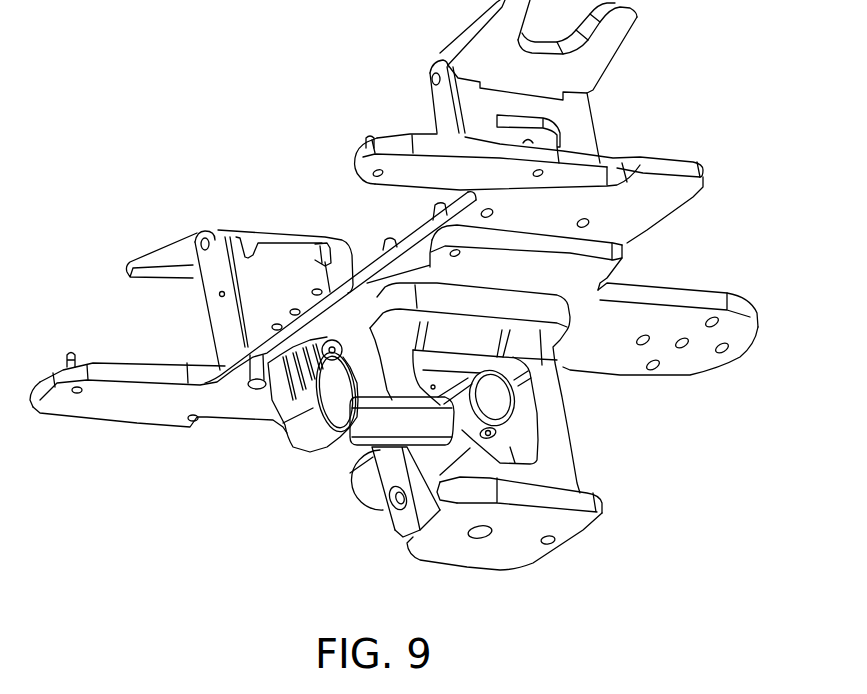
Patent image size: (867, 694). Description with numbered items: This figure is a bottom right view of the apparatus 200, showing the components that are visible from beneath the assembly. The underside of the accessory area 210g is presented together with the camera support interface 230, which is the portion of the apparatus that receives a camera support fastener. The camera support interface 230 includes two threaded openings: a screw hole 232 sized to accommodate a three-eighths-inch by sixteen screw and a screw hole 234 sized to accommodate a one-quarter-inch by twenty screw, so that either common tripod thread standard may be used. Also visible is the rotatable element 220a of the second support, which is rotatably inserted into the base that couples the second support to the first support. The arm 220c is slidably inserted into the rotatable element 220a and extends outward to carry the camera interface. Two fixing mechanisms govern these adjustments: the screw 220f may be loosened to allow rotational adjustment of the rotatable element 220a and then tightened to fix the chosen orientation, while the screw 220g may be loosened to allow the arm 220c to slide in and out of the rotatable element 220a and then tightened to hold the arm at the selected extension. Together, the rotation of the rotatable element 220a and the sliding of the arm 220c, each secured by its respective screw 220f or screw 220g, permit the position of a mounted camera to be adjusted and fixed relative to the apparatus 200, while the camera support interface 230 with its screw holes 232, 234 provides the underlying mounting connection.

The apparatus 200 is at (294, 124).
The accessory area 210g is at (688, 360).
The rotatable element 220a is at (357, 500).
The arm 220c is at (350, 443).
The screw 220f is at (383, 515).
The screw 220g is at (500, 435).
The camera support interface 230 is at (505, 557).
The screw hole 232 is at (477, 543).
The screw hole 234 is at (555, 543).